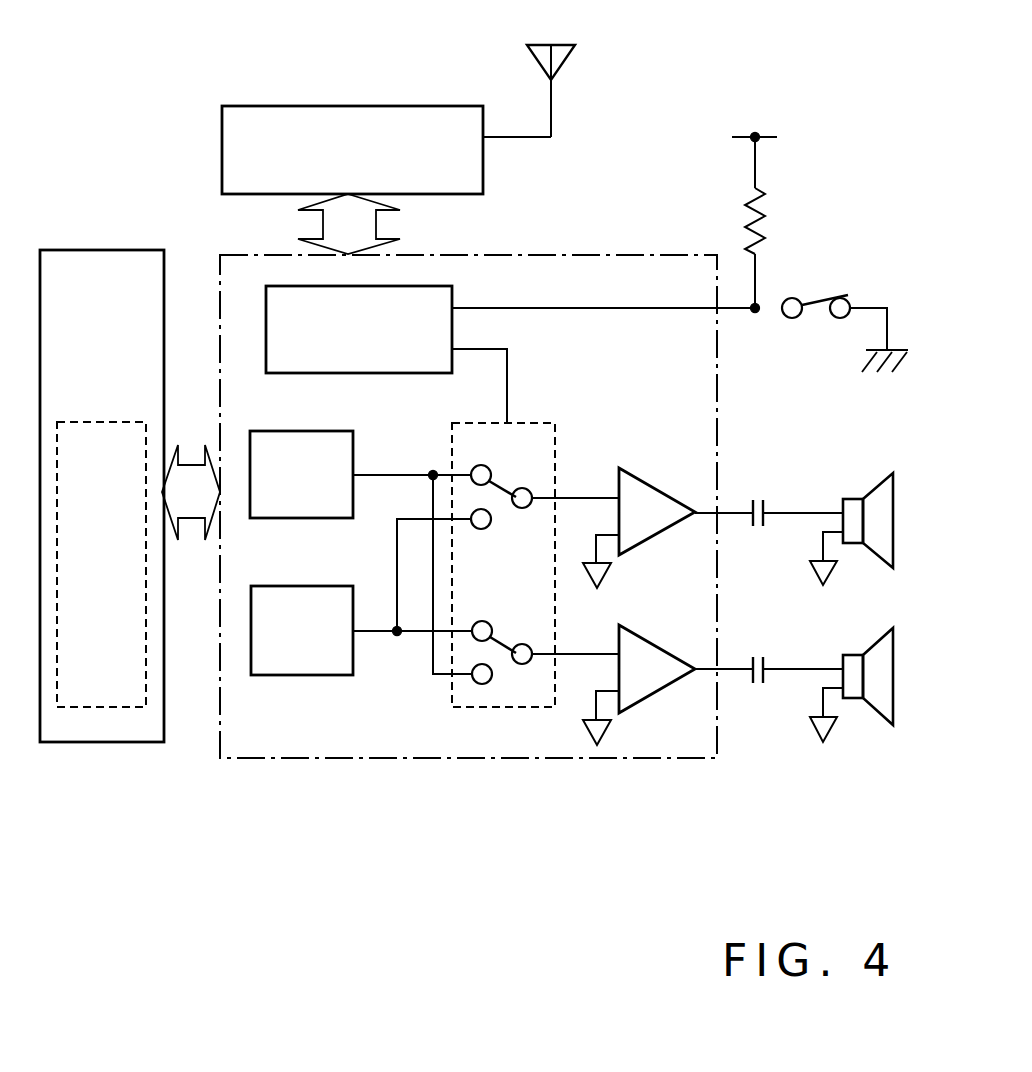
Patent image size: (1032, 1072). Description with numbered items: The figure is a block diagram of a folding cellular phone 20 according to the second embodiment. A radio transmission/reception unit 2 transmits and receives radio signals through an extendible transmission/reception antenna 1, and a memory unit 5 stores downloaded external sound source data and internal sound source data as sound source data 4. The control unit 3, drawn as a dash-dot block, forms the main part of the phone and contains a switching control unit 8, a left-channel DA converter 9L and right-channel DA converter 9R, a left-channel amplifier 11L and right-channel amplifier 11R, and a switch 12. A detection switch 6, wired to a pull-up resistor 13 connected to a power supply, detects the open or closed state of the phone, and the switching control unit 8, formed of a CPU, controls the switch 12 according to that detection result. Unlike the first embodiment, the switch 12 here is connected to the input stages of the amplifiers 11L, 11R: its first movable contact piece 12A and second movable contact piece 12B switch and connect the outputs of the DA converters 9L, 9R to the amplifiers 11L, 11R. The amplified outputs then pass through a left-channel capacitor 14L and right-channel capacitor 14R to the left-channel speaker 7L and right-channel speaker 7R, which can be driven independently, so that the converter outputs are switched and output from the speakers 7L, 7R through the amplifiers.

The transmission/reception antenna 1 is at (566, 58).
The radio transmission/reception unit 2 is at (310, 106).
The control unit 3 is at (260, 760).
The sound source data 4 is at (93, 422).
The memory unit 5 is at (70, 250).
The detection switch 6 is at (817, 297).
The left-channel speaker 7L is at (856, 499).
The right-channel speaker 7R is at (856, 655).
The switching control unit 8 is at (454, 296).
The left-channel DA converter 9L is at (271, 431).
The right-channel DA converter 9R is at (271, 586).
The left-channel amplifier 11L is at (650, 488).
The right-channel amplifier 11R is at (650, 643).
The switch 12 is at (535, 541).
The first movable contact piece 12A is at (503, 484).
The second movable contact piece 12B is at (503, 643).
The pull-up resistor 13 is at (768, 204).
The left-channel capacitor 14L is at (758, 498).
The right-channel capacitor 14R is at (758, 655).
The folding cellular phone 20 is at (836, 88).